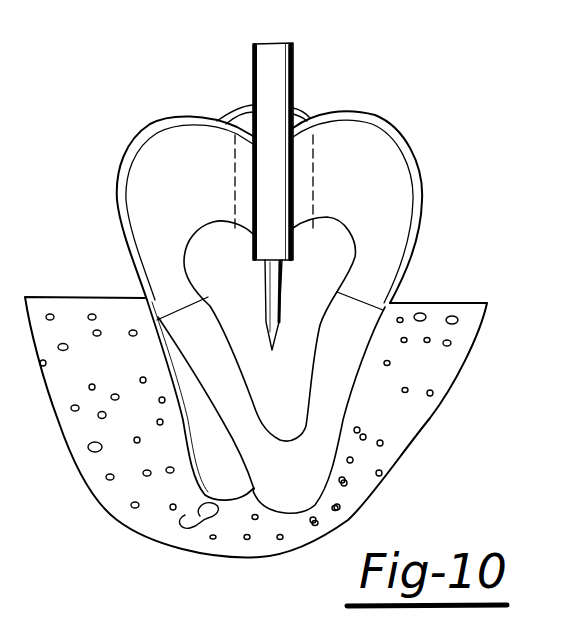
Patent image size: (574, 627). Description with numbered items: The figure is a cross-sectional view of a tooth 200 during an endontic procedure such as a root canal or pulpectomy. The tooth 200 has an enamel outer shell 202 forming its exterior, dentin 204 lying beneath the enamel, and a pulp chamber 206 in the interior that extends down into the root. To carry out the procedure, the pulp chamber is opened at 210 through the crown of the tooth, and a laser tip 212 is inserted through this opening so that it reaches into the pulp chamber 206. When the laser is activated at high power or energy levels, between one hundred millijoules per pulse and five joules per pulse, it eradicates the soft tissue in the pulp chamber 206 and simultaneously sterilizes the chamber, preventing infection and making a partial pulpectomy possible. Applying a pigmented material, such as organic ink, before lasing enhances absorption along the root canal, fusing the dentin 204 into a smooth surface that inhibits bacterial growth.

The tooth 200 is at (287, 293).
The enamel outer shell 202 is at (122, 160).
The dentin 204 is at (195, 142).
The pulp chamber 206 is at (281, 363).
The opening 210 is at (304, 188).
The laser tip 212 is at (273, 296).